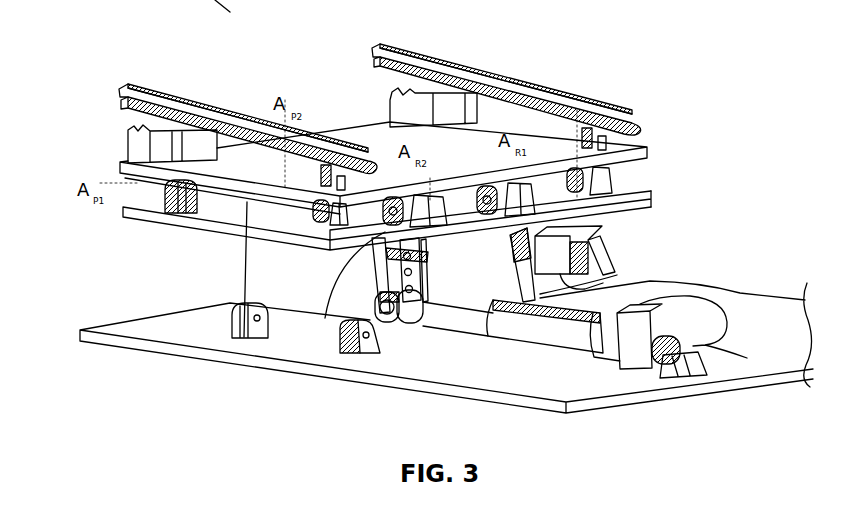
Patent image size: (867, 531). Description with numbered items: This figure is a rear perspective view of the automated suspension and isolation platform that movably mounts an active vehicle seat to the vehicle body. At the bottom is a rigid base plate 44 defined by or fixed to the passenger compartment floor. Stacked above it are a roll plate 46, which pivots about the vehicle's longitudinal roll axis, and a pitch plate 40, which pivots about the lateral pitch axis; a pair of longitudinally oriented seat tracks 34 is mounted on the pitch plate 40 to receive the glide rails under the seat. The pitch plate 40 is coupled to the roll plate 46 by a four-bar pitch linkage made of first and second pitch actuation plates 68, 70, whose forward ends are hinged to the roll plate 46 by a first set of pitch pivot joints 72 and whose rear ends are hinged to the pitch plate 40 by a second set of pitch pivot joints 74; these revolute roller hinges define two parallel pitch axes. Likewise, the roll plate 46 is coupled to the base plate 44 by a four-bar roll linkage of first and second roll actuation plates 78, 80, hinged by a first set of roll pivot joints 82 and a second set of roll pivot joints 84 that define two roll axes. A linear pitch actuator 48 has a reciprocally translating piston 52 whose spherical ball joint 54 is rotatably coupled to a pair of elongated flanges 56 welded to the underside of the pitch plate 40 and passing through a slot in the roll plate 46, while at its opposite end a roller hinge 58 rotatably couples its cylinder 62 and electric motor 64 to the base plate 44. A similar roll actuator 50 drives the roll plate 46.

The seat tracks 34 is at (118, 95).
The pitch plate 40 is at (118, 162).
The base plate 44 is at (130, 330).
The roll plate 46 is at (122, 212).
The pitch actuator 48 is at (543, 372).
The roll actuator 50 is at (617, 275).
The piston 52 is at (470, 323).
The spherical ball joint 54 is at (386, 326).
The elongated flanges 56 is at (403, 325).
The roller hinge 58 is at (672, 378).
The cylinder 62 is at (576, 345).
The electric motor 64 is at (745, 350).
The first pitch actuation plate 68 is at (651, 201).
The second pitch actuation plate 70 is at (245, 203).
The first set of pitch pivot joints 72 is at (168, 205).
The second set of pitch pivot joints 74 is at (318, 226).
The first roll actuation plate 78 is at (652, 282).
The second roll actuation plate 80 is at (280, 283).
The first set of roll pivot joints 82 is at (248, 340).
The second set of roll pivot joints 84 is at (328, 318).